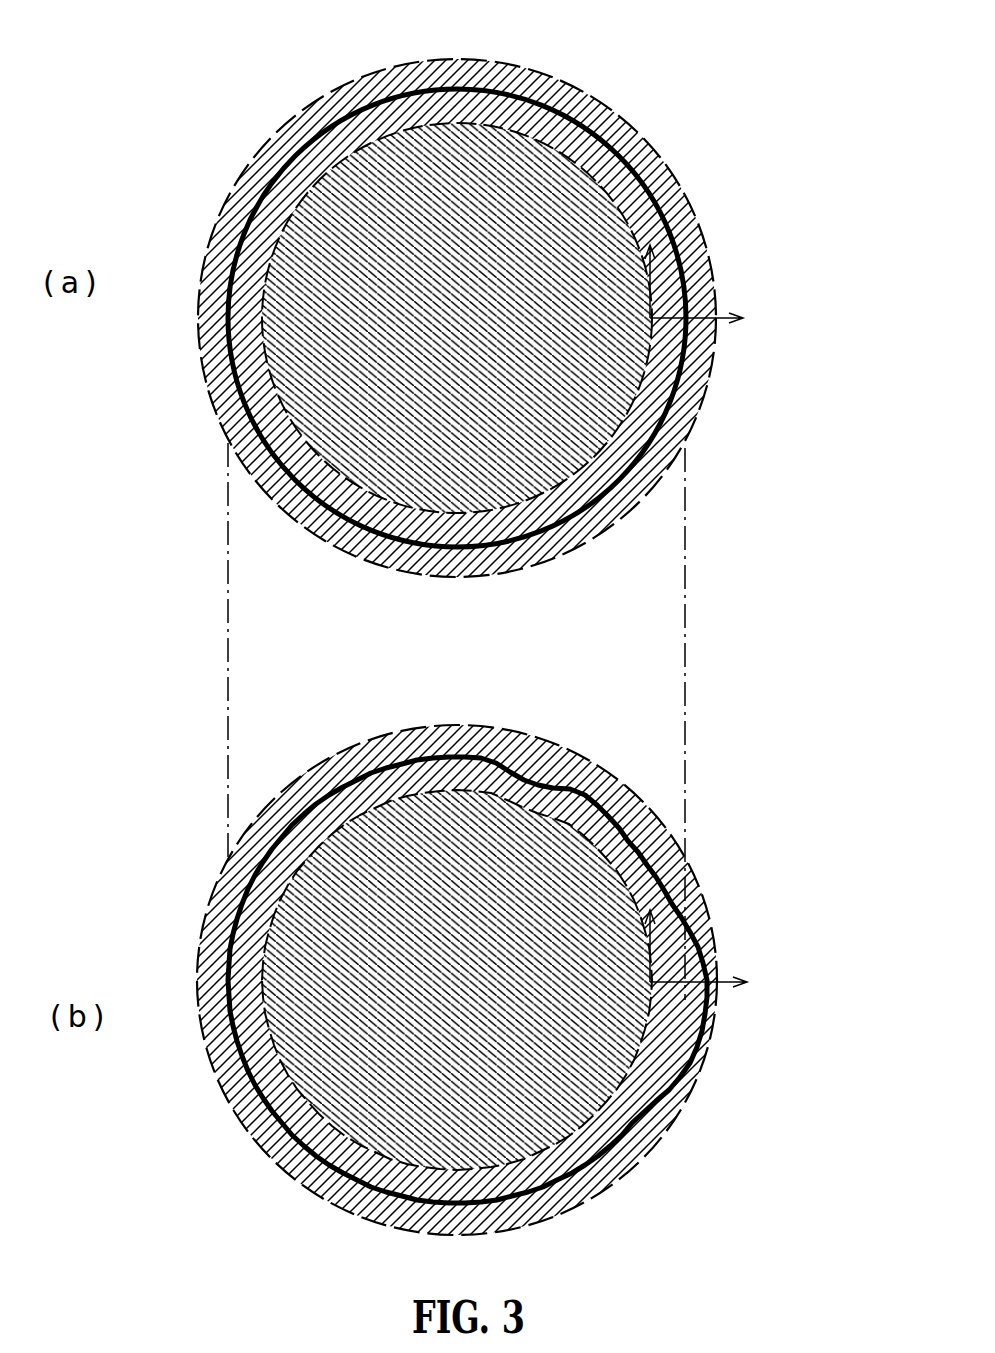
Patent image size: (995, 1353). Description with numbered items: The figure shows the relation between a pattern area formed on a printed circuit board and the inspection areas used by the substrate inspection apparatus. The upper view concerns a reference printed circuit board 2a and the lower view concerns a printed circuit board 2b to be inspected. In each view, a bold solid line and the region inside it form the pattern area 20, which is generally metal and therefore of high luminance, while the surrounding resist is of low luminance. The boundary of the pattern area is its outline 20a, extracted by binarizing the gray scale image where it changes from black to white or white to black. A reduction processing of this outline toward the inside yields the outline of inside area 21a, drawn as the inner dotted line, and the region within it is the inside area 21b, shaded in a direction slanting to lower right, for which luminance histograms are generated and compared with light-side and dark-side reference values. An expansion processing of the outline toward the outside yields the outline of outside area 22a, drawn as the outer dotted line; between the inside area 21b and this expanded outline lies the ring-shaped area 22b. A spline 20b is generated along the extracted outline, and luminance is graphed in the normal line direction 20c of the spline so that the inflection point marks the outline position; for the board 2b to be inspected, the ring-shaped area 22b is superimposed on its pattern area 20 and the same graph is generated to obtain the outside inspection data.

The reference printed circuit board 2a is at (712, 500).
The printed circuit board to be inspected 2b is at (713, 1143).
The pattern area 20 is at (524, 121).
The outline 20a is at (605, 118).
The spline 20b is at (685, 268).
The normal line direction 20c is at (667, 222).
The outline of inside area 21a is at (362, 145).
The inside area 21b is at (310, 220).
The outline of outside area 22a is at (205, 375).
The ring-shaped area 22b is at (228, 446).